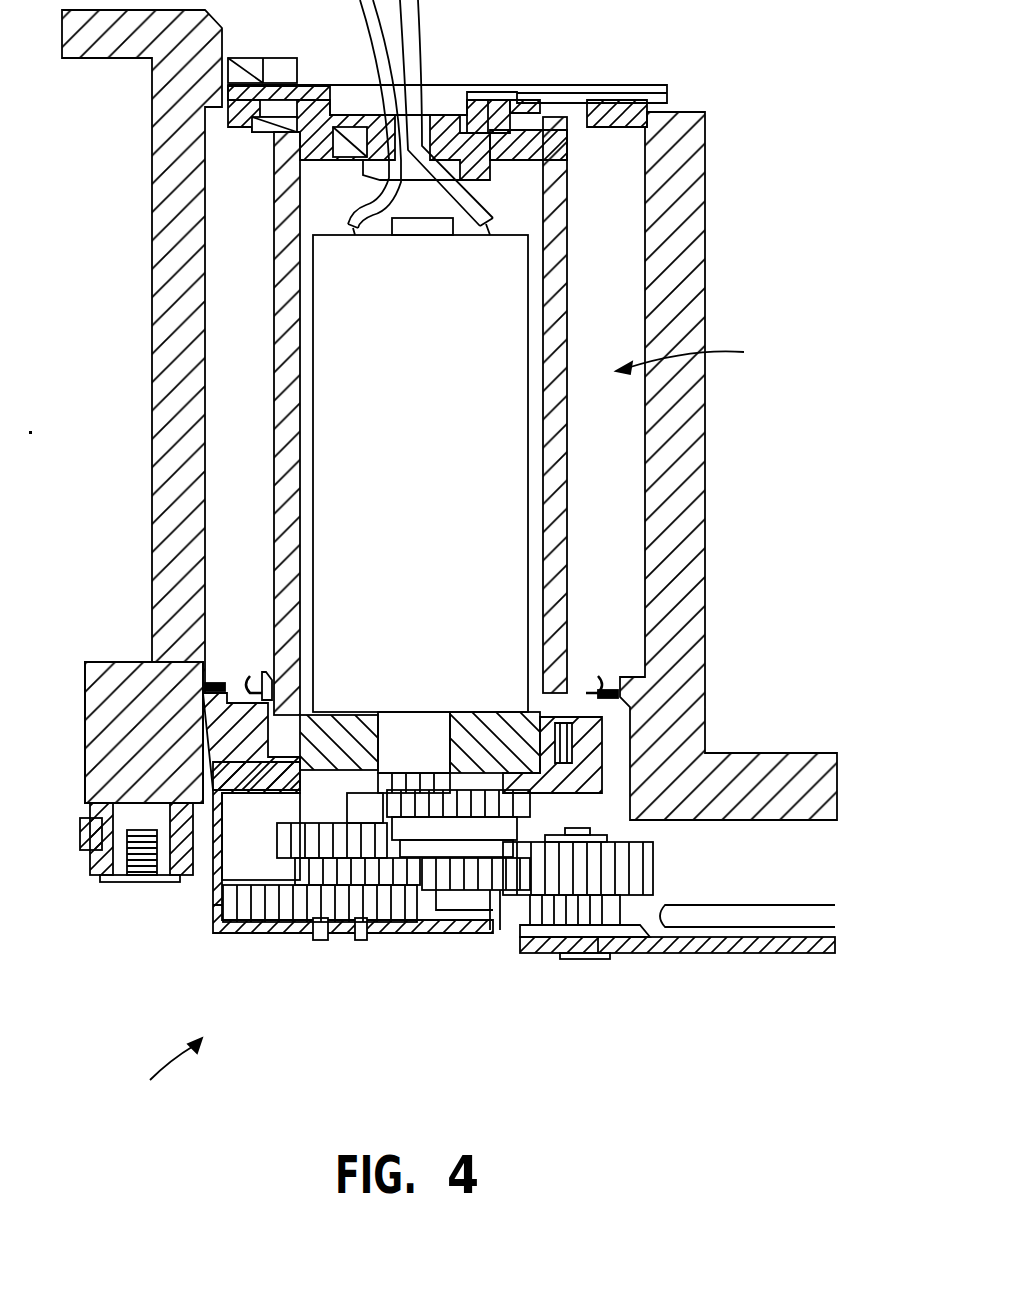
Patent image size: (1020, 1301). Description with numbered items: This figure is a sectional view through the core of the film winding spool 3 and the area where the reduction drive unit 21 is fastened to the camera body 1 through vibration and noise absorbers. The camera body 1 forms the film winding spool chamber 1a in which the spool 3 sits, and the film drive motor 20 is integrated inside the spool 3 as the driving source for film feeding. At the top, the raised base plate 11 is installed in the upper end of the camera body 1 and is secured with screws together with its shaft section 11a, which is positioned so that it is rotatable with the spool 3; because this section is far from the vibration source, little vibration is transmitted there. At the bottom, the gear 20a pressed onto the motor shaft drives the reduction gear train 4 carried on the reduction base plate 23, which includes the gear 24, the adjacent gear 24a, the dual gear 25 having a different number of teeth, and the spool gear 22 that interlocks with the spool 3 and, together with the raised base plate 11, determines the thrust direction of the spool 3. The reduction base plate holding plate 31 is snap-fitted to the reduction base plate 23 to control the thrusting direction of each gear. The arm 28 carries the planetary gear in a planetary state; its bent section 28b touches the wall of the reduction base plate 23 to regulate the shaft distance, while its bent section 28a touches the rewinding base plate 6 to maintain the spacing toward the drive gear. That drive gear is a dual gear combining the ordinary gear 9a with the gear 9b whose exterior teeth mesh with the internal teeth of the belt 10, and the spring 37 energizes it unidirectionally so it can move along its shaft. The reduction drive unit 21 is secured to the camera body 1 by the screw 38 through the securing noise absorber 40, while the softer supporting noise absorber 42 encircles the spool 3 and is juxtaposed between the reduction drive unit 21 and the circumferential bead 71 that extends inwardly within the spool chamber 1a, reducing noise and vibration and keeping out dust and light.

The camera body 1 is at (686, 300).
The film winding spool chamber 1a is at (696, 355).
The film winding spool 3 is at (555, 565).
The reduction gear train 4 is at (159, 1068).
The rewinding base plate 6 is at (605, 945).
The ordinary gear 9a is at (650, 856).
The gear having exterior teeth 9b is at (632, 910).
The belt 10 is at (800, 915).
The raised base plate 11 is at (514, 102).
The shaft section 11a is at (452, 120).
The film drive motor 20 is at (500, 470).
The gear 20a is at (420, 740).
The reduction drive unit 21 is at (340, 960).
The spool gear 22 is at (253, 697).
The reduction base plate 23 is at (240, 745).
The gear 24 is at (458, 875).
The gear 24a is at (382, 905).
The dual gear 25 is at (237, 905).
The arm 28 is at (498, 920).
The bent section 28a is at (615, 940).
The bent section 28b is at (640, 900).
The reduction base plate holding plate 31 is at (285, 930).
The spring 37 is at (660, 953).
The screw 38 is at (118, 883).
The securing noise absorber 40 is at (85, 868).
The supporting noise absorber 42 is at (222, 687).
The circumferential bead 71 is at (250, 690).